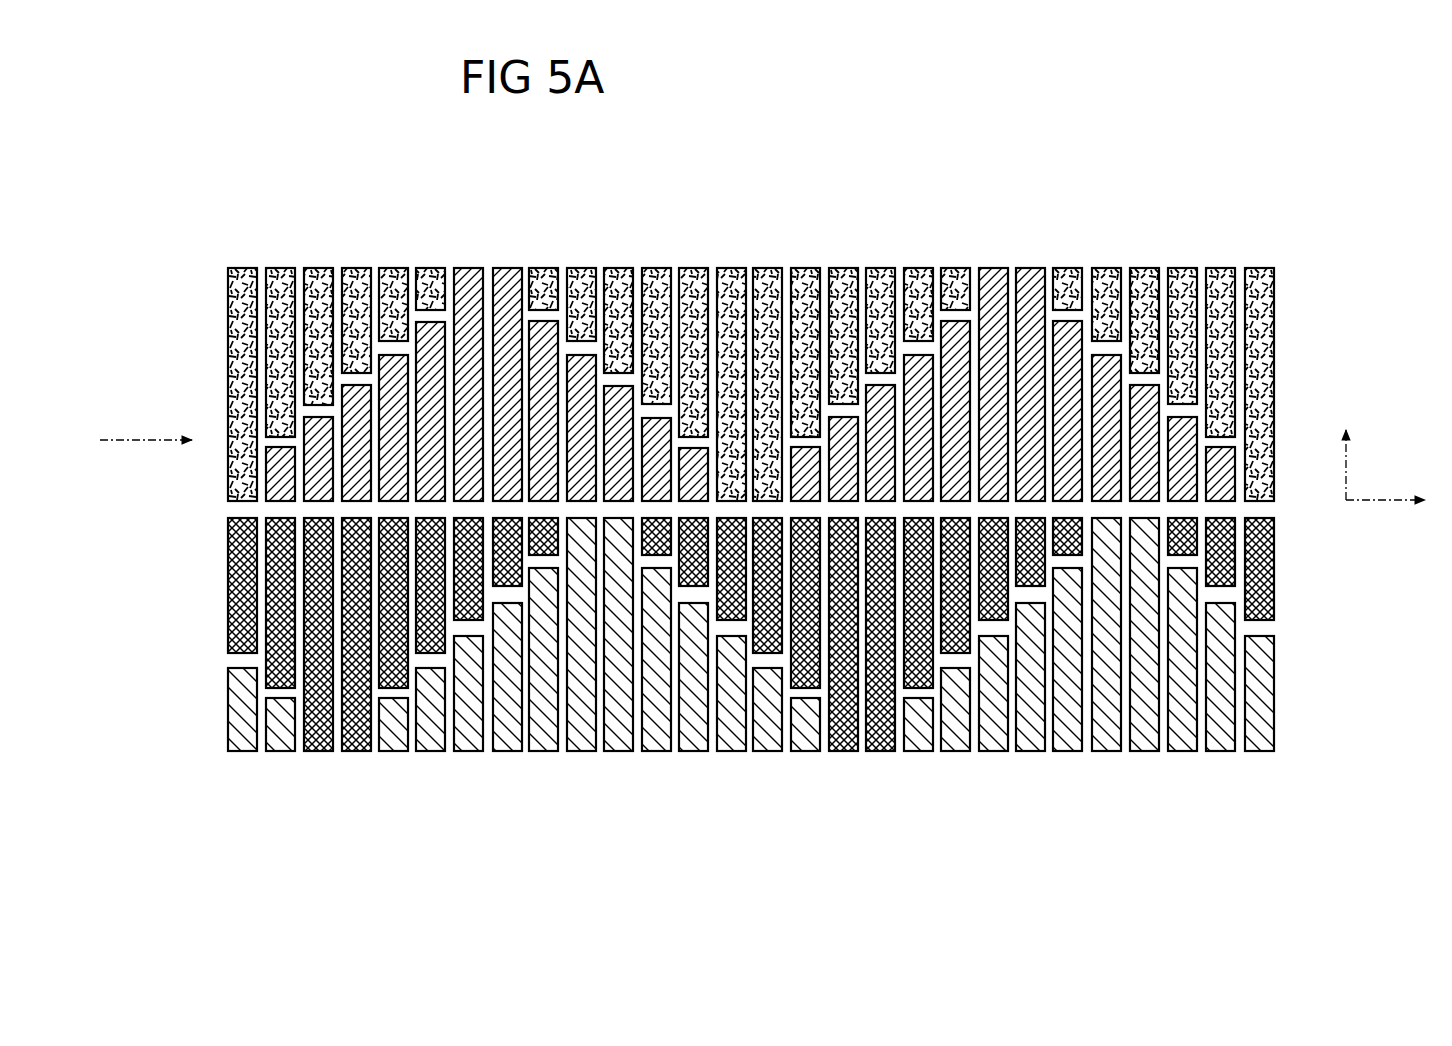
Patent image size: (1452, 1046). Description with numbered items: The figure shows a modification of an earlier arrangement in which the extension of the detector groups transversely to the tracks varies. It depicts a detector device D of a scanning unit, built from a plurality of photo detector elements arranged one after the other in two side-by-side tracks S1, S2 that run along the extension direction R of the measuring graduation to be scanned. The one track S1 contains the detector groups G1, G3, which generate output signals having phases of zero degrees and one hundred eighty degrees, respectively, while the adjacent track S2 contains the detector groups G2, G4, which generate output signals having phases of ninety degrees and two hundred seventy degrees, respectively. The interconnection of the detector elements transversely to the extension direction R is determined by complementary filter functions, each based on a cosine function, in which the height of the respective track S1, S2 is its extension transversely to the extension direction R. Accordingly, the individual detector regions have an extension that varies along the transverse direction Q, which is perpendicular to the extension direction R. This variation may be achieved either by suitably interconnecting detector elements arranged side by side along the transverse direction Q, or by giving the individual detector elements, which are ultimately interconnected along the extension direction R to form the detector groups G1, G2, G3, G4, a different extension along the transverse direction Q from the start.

The detector group G1 is at (328, 268).
The detector group G2 is at (393, 692).
The detector group G3 is at (531, 321).
The detector group G4 is at (277, 742).
The track S1 is at (803, 340).
The track S2 is at (811, 684).
The detector device D is at (146, 422).
The transverse direction Q is at (1348, 448).
The extension direction R is at (1385, 484).